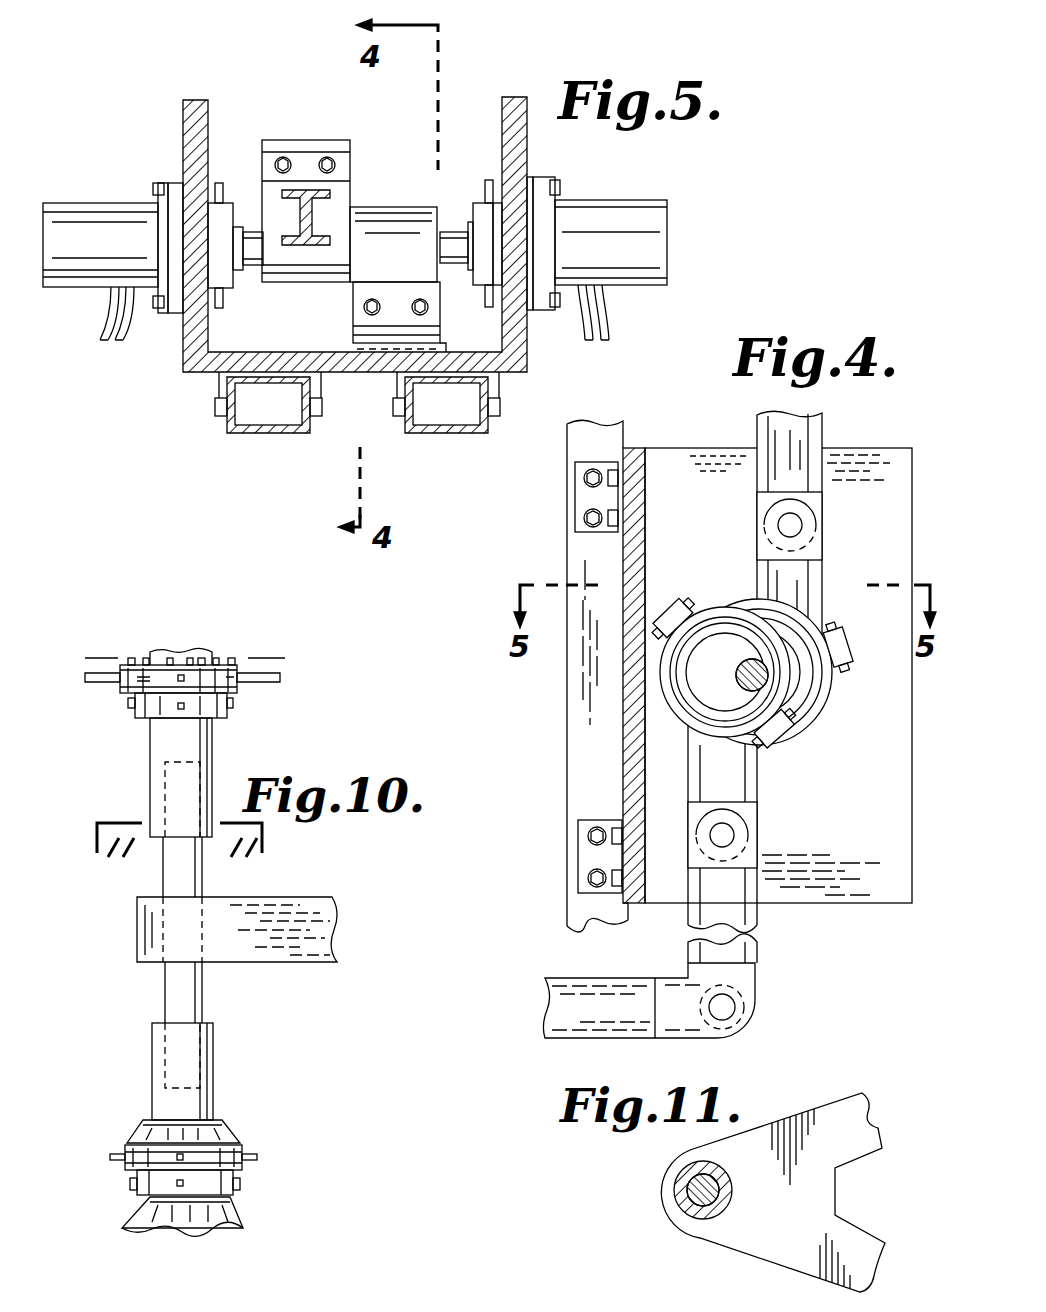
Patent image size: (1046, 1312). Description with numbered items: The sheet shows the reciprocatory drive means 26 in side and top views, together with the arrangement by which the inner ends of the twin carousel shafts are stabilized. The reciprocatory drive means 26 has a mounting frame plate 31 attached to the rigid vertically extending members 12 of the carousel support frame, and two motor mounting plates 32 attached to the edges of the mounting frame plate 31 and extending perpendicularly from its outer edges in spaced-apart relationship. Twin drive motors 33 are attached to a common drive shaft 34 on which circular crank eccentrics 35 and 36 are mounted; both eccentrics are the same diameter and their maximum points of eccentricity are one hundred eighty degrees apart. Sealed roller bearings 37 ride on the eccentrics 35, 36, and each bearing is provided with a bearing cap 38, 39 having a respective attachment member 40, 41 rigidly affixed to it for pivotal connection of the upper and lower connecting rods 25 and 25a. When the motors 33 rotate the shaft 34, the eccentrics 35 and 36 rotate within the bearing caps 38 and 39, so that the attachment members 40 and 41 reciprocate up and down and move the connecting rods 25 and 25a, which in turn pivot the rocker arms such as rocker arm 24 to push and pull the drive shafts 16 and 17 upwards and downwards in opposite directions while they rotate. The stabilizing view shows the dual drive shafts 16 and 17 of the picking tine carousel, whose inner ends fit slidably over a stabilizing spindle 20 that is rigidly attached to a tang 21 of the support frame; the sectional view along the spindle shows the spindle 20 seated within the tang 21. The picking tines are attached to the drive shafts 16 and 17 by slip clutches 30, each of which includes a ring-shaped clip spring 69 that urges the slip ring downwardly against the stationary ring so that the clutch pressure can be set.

In FIG. 5, the vertically extending members 12 is at (266, 428).
In FIG. 4, the vertically extending members 12 is at (590, 782).
In FIG. 10, the drive shaft 16 is at (163, 753).
In FIG. 11, the drive shaft 16 is at (680, 1232).
In FIG. 10, the drive shaft 17 is at (166, 1094).
In FIG. 10, the stabilizing spindle 20 is at (172, 878).
In FIG. 11, the stabilizing spindle 20 is at (680, 1180).
In FIG. 10, the tang 21 is at (309, 897).
In FIG. 11, the tang 21 is at (865, 1091).
In FIG. 4, the rocker arm 24 is at (576, 1010).
In FIG. 4, the connecting rod 25 is at (823, 426).
In FIG. 4, the lower connecting rod 25a is at (735, 912).
In FIG. 5, the reciprocatory drive means 26 is at (228, 76).
In FIG. 4, the reciprocatory drive means 26 is at (860, 928).
In FIG. 10, the slip clutch 30 is at (251, 713).
In FIG. 5, the mounting frame plate 31 is at (356, 362).
In FIG. 4, the mounting frame plate 31 is at (634, 678).
In FIG. 5, the motor mounting plates 32 is at (190, 121).
In FIG. 4, the motor mounting plates 32 is at (904, 487).
In FIG. 5, the drive motors 33 is at (68, 272).
In FIG. 5, the drive shaft 34 is at (251, 232).
In FIG. 4, the drive shaft 34 is at (754, 692).
In FIG. 4, the crank eccentric 35 is at (728, 689).
In FIG. 4, the crank eccentric 36 is at (798, 702).
In FIG. 4, the sealed roller bearings 37 is at (710, 624).
In FIG. 5, the bearing cap 38 is at (384, 208).
In FIG. 4, the bearing cap 38 is at (733, 610).
In FIG. 5, the bearing cap 39 is at (303, 140).
In FIG. 4, the bearing cap 39 is at (818, 633).
In FIG. 5, the attachment member 40 is at (302, 244).
In FIG. 4, the attachment member 40 is at (813, 535).
In FIG. 4, the attachment member 41 is at (740, 808).
In FIG. 10, the ring-shaped clip spring 69 is at (216, 1128).